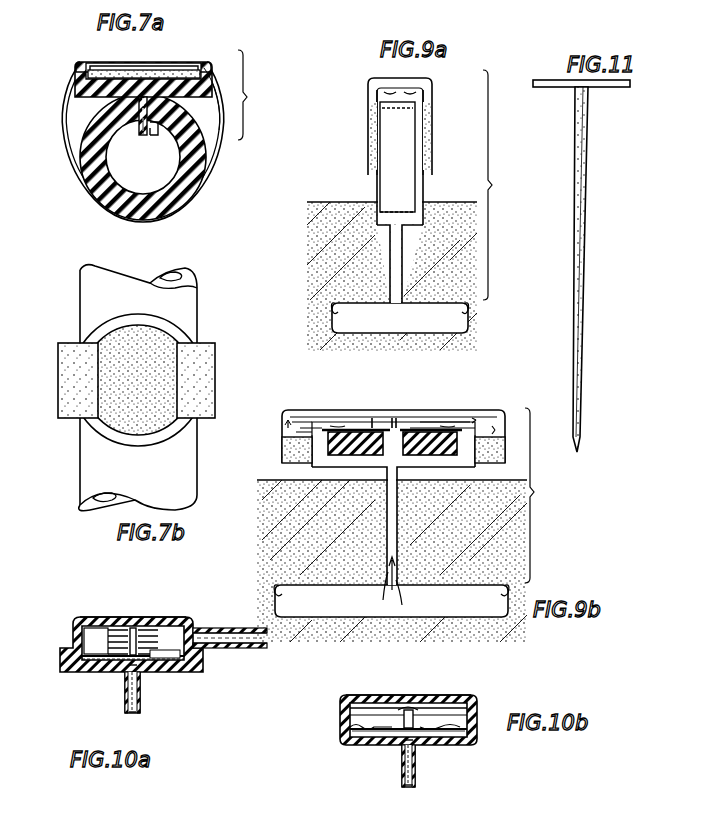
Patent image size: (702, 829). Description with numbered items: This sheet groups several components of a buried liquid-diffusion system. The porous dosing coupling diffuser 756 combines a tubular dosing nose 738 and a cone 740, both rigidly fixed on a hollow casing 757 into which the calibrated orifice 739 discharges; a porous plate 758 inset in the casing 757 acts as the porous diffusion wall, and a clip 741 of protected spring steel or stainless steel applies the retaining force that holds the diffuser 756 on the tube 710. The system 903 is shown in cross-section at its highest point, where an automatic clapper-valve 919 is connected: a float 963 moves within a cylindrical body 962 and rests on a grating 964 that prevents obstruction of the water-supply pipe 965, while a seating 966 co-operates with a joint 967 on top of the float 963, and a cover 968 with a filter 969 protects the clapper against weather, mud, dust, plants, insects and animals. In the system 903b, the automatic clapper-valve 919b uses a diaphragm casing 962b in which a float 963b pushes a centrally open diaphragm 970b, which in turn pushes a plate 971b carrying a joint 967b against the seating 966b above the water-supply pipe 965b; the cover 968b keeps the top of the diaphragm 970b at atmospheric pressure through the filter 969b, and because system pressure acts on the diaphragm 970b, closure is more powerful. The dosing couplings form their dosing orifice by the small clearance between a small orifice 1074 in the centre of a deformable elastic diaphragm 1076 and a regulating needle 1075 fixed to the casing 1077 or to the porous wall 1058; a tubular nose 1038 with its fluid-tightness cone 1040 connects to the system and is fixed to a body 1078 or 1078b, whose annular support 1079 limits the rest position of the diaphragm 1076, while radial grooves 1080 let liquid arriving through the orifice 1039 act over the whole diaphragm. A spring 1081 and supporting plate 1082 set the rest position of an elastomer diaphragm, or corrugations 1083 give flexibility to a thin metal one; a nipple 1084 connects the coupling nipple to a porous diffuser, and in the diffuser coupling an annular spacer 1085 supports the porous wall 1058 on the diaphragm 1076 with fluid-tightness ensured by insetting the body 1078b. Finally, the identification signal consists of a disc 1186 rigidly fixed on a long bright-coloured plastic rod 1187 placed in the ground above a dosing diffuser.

In FIG. 7a, the tube 710 is at (92, 200).
In FIG. 7b, the tube 710 is at (185, 305).
In FIG. 7a, the tubular dosing nose 738 is at (159, 140).
In FIG. 7a, the calibrated orifice 739 is at (143, 135).
In FIG. 7a, the cone 740 is at (148, 103).
In FIG. 7a, the clip 741 is at (220, 142).
In FIG. 7b, the clip 741 is at (203, 357).
In FIG. 7a, the porous dosing coupling diffuser 756 is at (256, 95).
In FIG. 7a, the hollow casing 757 is at (82, 68).
In FIG. 7b, the hollow casing 757 is at (173, 428).
In FIG. 7a, the porous plate 758 is at (158, 70).
In FIG. 7b, the porous plate 758 is at (130, 335).
In FIG. 9a, the system of liquid diffusion 903 is at (437, 315).
In FIG. 9a, the automatic clapper-valve 919 is at (502, 185).
In FIG. 9a, the cylindrical body 962 is at (424, 193).
In FIG. 9a, the float 963 is at (390, 176).
In FIG. 9a, the grating 964 is at (415, 215).
In FIG. 9a, the water-supply pipe 965 is at (395, 268).
In FIG. 9a, the seating 966 is at (418, 92).
In FIG. 9a, the joint 967 is at (382, 110).
In FIG. 9a, the cover 968 is at (378, 78).
In FIG. 9a, the filter 969 is at (370, 140).
In FIG. 11, the disc 1186 is at (615, 88).
In FIG. 11, the rod 1187 is at (580, 304).
In FIG. 9b, the system 903b is at (440, 590).
In FIG. 9b, the automatic clapper-valve 919b is at (555, 495).
In FIG. 9b, the diaphragm casing 962b is at (345, 472).
In FIG. 9b, the float 963b is at (443, 452).
In FIG. 9b, the water-supply pipe 965b is at (398, 538).
In FIG. 9b, the seating 966b is at (372, 418).
In FIG. 9b, the joint 967b is at (358, 420).
In FIG. 9b, the cover 968b is at (500, 414).
In FIG. 9b, the filter 969b is at (292, 470).
In FIG. 9b, the diaphragm 970b is at (316, 420).
In FIG. 9b, the plate 971b is at (448, 420).
In FIG. 10a, the tubular nose 1038 is at (141, 705).
In FIG. 10b, the tubular nose 1038 is at (416, 775).
In FIG. 10a, the orifice 1039 is at (124, 705).
In FIG. 10b, the orifice 1039 is at (404, 783).
In FIG. 10a, the fluid-tightness cone 1040 is at (124, 672).
In FIG. 10b, the fluid-tightness cone 1040 is at (416, 748).
In FIG. 10b, the porous wall 1058 is at (360, 696).
In FIG. 10a, the small orifice 1074 is at (118, 658).
In FIG. 10b, the small orifice 1074 is at (395, 735).
In FIG. 10a, the regulating needle 1075 is at (192, 622).
In FIG. 10b, the regulating needle 1075 is at (414, 708).
In FIG. 10a, the deformable elastic diaphragm 1076 is at (84, 642).
In FIG. 10b, the deformable elastic diaphragm 1076 is at (380, 722).
In FIG. 10a, the casing 1077 is at (88, 617).
In FIG. 10a, the body 1078 is at (196, 676).
In FIG. 10b, the body 1078b is at (466, 750).
In FIG. 10a, the annular support 1079 is at (148, 658).
In FIG. 10b, the annular support 1079 is at (420, 720).
In FIG. 10a, the radial grooves 1080 is at (141, 690).
In FIG. 10b, the radial grooves 1080 is at (404, 745).
In FIG. 10a, the spring 1081 is at (144, 630).
In FIG. 10a, the supporting plate 1082 is at (103, 628).
In FIG. 10b, the corrugations 1083 is at (350, 727).
In FIG. 10a, the nipple 1084 is at (230, 640).
In FIG. 10b, the annular spacer 1085 is at (350, 712).